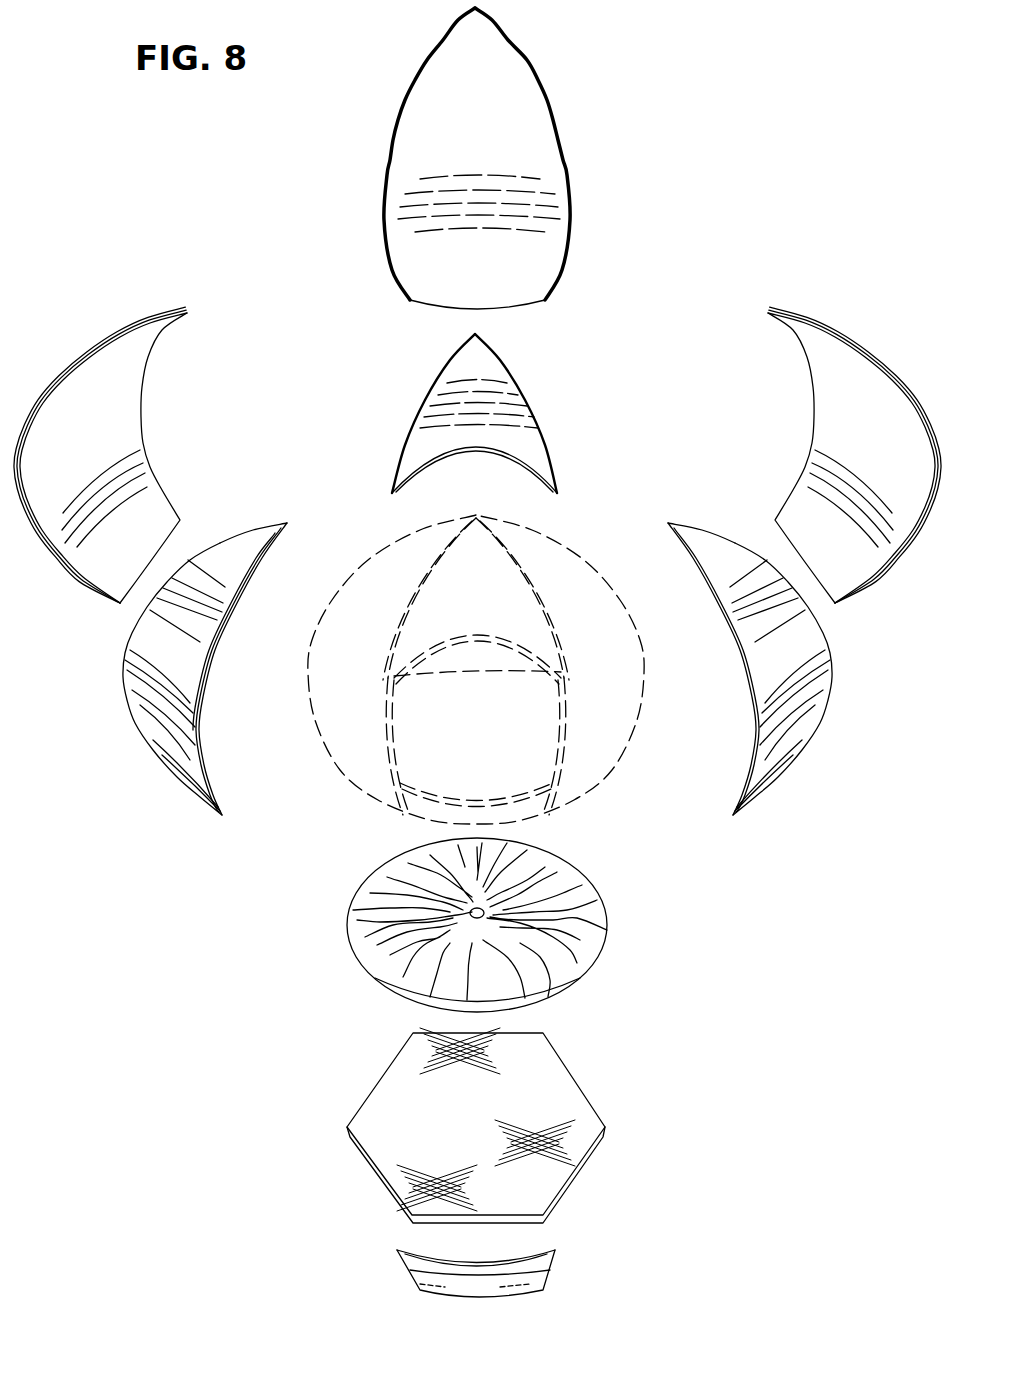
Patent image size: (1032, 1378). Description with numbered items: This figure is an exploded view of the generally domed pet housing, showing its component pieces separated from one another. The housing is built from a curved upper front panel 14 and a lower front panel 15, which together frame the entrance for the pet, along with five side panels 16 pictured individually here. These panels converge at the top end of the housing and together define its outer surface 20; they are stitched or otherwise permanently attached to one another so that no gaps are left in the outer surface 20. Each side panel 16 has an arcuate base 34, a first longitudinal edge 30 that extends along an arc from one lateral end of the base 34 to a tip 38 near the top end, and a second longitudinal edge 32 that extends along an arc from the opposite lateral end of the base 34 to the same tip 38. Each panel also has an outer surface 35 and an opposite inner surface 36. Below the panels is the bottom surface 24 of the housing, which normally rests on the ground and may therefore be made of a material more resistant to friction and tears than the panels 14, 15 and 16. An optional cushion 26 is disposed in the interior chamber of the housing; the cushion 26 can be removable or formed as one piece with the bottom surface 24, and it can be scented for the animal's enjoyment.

The curved upper front panel 14 is at (433, 378).
The lower front panel 15 is at (543, 1285).
The side panels 16 is at (477, 434).
The outer surface 20 is at (127, 717).
The bottom surface 24 is at (600, 1213).
The cushion 26 is at (593, 930).
The first longitudinal edge 30 is at (92, 662).
The second longitudinal edge 32 is at (232, 687).
The arcuate base 34 is at (143, 807).
The outer surface 35 is at (820, 648).
The inner surface 36 is at (541, 136).
The tip 38 is at (187, 313).